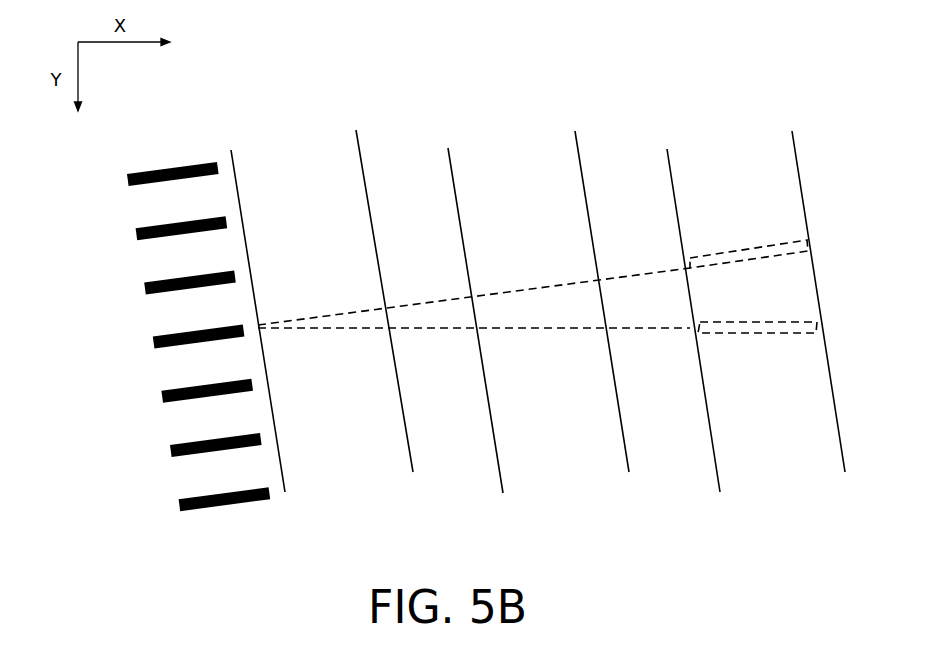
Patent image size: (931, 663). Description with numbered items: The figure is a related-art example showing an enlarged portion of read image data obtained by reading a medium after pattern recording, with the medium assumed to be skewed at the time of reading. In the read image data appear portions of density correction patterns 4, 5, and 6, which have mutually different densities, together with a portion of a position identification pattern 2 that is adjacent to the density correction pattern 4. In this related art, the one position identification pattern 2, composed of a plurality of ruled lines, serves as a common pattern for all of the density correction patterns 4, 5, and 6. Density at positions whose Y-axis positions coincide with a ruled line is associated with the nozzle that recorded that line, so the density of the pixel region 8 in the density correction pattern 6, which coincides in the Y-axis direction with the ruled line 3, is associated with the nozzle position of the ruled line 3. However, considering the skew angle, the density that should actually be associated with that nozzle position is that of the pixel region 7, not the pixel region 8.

The position identification pattern 2 is at (198, 148).
The ruled line 3 is at (148, 340).
The density correction pattern 4 is at (302, 125).
The density correction pattern 5 is at (511, 125).
The density correction pattern 6 is at (721, 130).
The pixel region 7 is at (737, 228).
The pixel region 8 is at (791, 348).